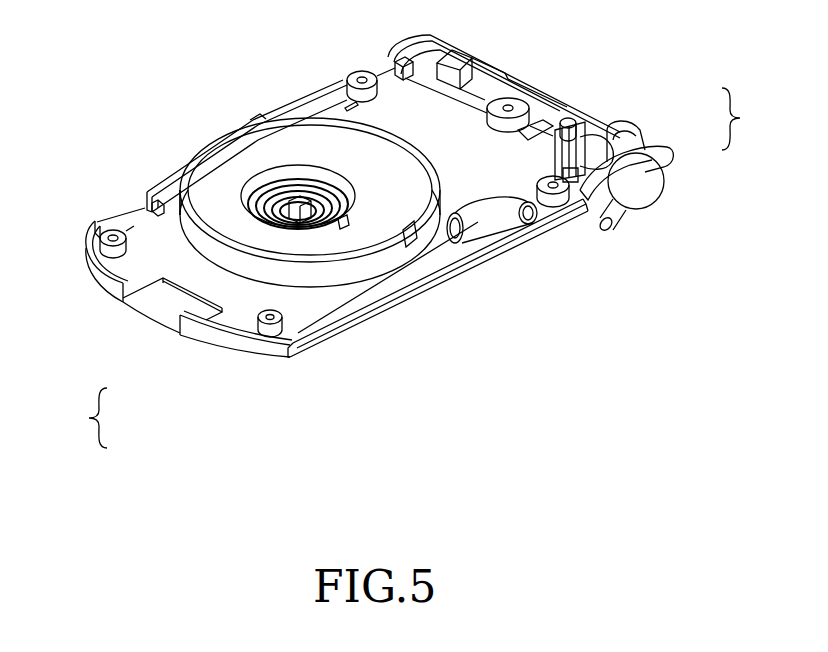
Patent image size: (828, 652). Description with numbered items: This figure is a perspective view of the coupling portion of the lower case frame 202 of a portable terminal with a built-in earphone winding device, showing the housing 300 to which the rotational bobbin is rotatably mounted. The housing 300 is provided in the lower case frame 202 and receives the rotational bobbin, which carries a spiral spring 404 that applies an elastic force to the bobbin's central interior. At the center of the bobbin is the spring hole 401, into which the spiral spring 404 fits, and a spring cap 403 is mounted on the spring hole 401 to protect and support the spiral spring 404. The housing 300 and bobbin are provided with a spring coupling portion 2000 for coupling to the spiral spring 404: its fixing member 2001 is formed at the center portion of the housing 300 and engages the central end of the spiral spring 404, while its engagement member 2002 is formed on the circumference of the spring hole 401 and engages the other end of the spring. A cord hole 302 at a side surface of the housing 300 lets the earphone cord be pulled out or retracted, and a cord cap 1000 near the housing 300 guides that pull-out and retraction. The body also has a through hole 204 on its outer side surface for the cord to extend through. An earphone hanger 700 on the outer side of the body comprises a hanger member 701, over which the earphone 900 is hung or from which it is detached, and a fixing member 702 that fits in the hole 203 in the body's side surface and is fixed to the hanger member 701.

The lower case frame 202 is at (97, 277).
The hole 203 is at (588, 220).
The through hole 204 is at (543, 228).
The housing 300 is at (168, 225).
The cord hole 302 is at (413, 244).
The spring hole 401 is at (297, 166).
The spring cap 403 is at (183, 165).
The spiral spring 404 is at (197, 182).
The earphone hanger 700 is at (751, 119).
The hanger member 701 is at (662, 160).
The fixing member 702 is at (611, 126).
The earphone 900 is at (641, 203).
The cord cap 1000 is at (483, 224).
The spring coupling portion 2000 is at (68, 418).
The fixing member 2001 is at (281, 228).
The engagement member 2002 is at (343, 224).